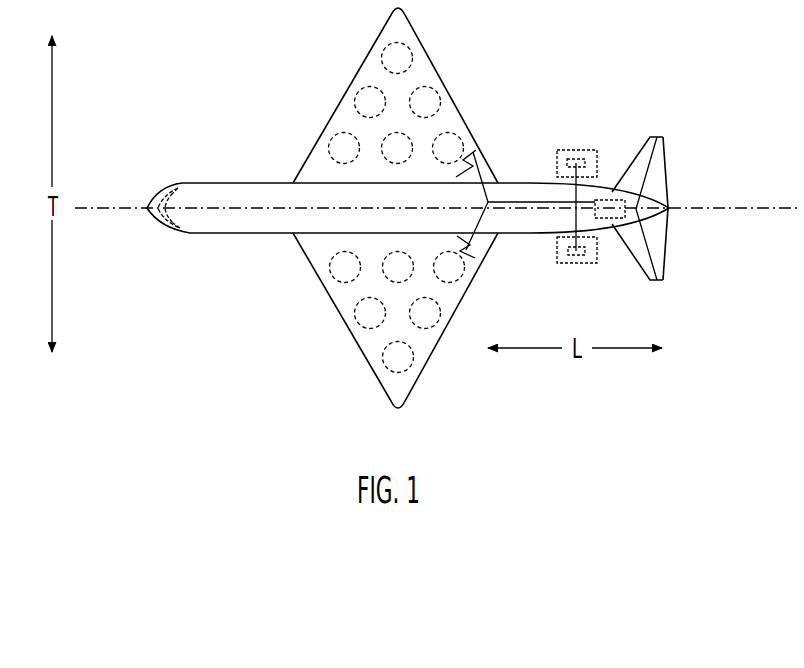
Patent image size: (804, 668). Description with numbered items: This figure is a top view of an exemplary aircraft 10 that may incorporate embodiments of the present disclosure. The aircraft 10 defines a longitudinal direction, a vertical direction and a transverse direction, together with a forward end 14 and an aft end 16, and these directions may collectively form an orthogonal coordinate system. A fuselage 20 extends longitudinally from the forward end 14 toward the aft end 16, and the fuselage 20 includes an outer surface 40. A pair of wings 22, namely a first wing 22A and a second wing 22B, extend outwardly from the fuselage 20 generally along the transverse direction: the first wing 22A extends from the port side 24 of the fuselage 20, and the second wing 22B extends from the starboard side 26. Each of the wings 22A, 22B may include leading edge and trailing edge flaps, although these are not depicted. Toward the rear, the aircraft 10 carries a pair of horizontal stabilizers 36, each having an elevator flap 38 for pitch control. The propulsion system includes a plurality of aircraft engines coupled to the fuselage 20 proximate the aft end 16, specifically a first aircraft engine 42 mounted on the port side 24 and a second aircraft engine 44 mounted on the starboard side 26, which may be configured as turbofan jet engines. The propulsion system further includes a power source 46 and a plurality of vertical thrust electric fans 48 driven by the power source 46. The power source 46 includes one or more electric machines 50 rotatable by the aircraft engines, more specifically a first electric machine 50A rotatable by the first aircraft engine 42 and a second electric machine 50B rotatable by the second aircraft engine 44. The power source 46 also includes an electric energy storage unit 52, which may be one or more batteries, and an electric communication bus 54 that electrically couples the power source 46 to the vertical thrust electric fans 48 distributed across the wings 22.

The aircraft 10 is at (551, 40).
The forward end 14 is at (152, 225).
The aft end 16 is at (670, 233).
The fuselage 20 is at (190, 224).
The pair of wings 22 is at (357, 72).
The first wing 22A is at (353, 347).
The second wing 22B is at (395, 95).
The port side 24 is at (251, 236).
The starboard side 26 is at (252, 179).
The horizontal stabilizers 36 is at (645, 155).
The elevator flap 38 is at (662, 152).
The outer surface 40 is at (523, 236).
The first aircraft engine 42 is at (582, 265).
The second aircraft engine 44 is at (555, 150).
The power source 46 is at (646, 190).
The vertical thrust electric fans 48 is at (437, 95).
The electric machines 50 is at (574, 158).
The first electric machine 50A is at (569, 265).
The second electric machine 50B is at (618, 122).
The electric energy storage unit 52 is at (604, 221).
The electric communication bus 54 is at (500, 202).